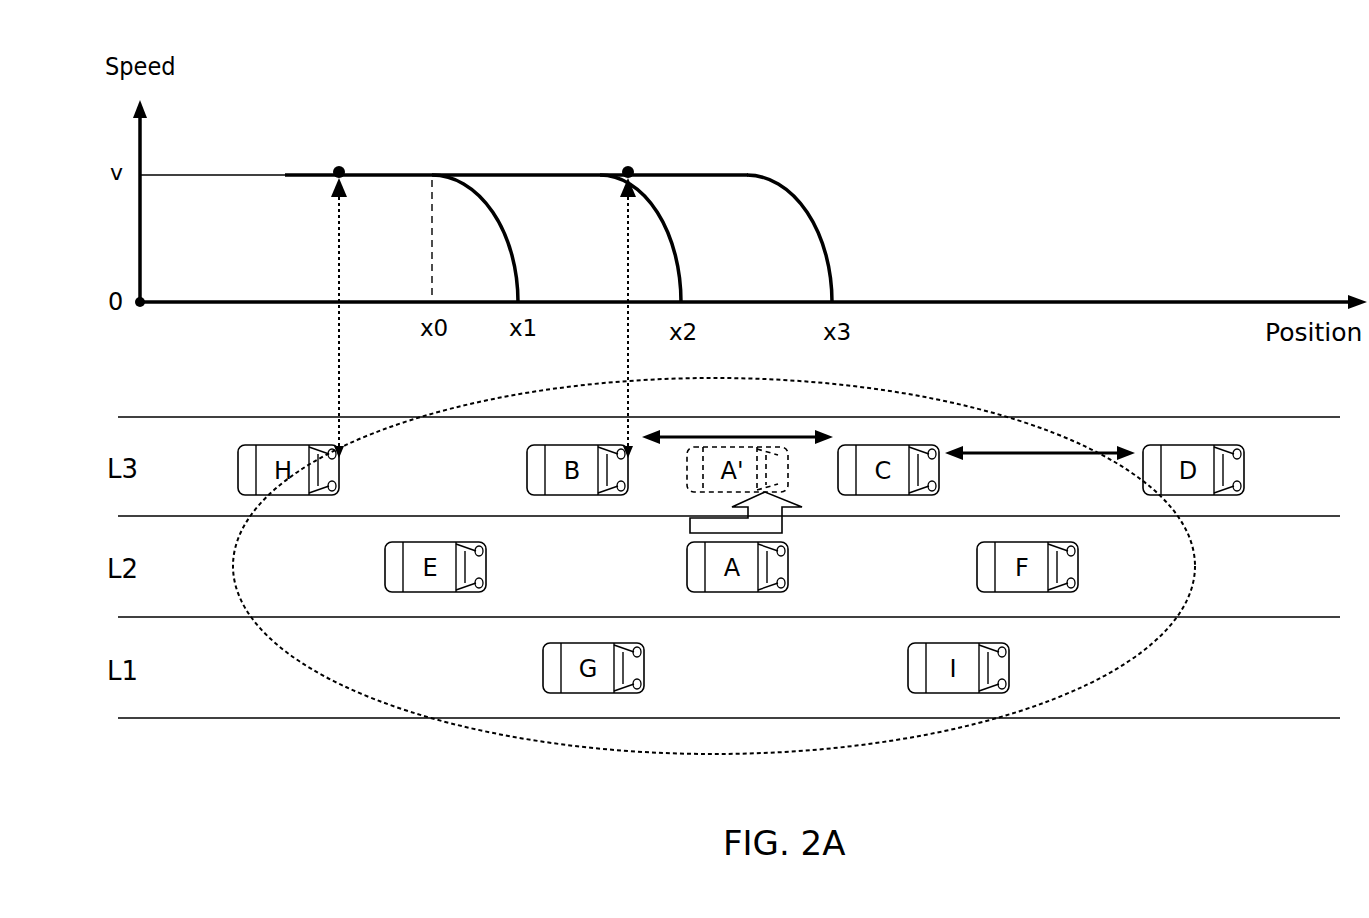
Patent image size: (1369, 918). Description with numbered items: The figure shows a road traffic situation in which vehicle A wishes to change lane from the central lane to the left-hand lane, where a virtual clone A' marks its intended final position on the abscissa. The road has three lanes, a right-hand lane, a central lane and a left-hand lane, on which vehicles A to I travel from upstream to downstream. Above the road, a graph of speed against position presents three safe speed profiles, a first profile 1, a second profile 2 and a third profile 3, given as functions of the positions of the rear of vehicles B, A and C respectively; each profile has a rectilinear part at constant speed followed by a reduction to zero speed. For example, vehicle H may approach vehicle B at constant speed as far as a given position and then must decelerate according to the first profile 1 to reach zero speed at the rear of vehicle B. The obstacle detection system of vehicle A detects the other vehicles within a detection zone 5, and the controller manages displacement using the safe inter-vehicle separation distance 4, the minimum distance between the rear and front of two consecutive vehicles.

The first safe speed profile 1 is at (452, 220).
The second safe speed profile 2 is at (593, 220).
The third safe speed profile 3 is at (752, 220).
The safe inter-vehicle separation distance 4 is at (888, 435).
The detection zone 5 is at (571, 748).